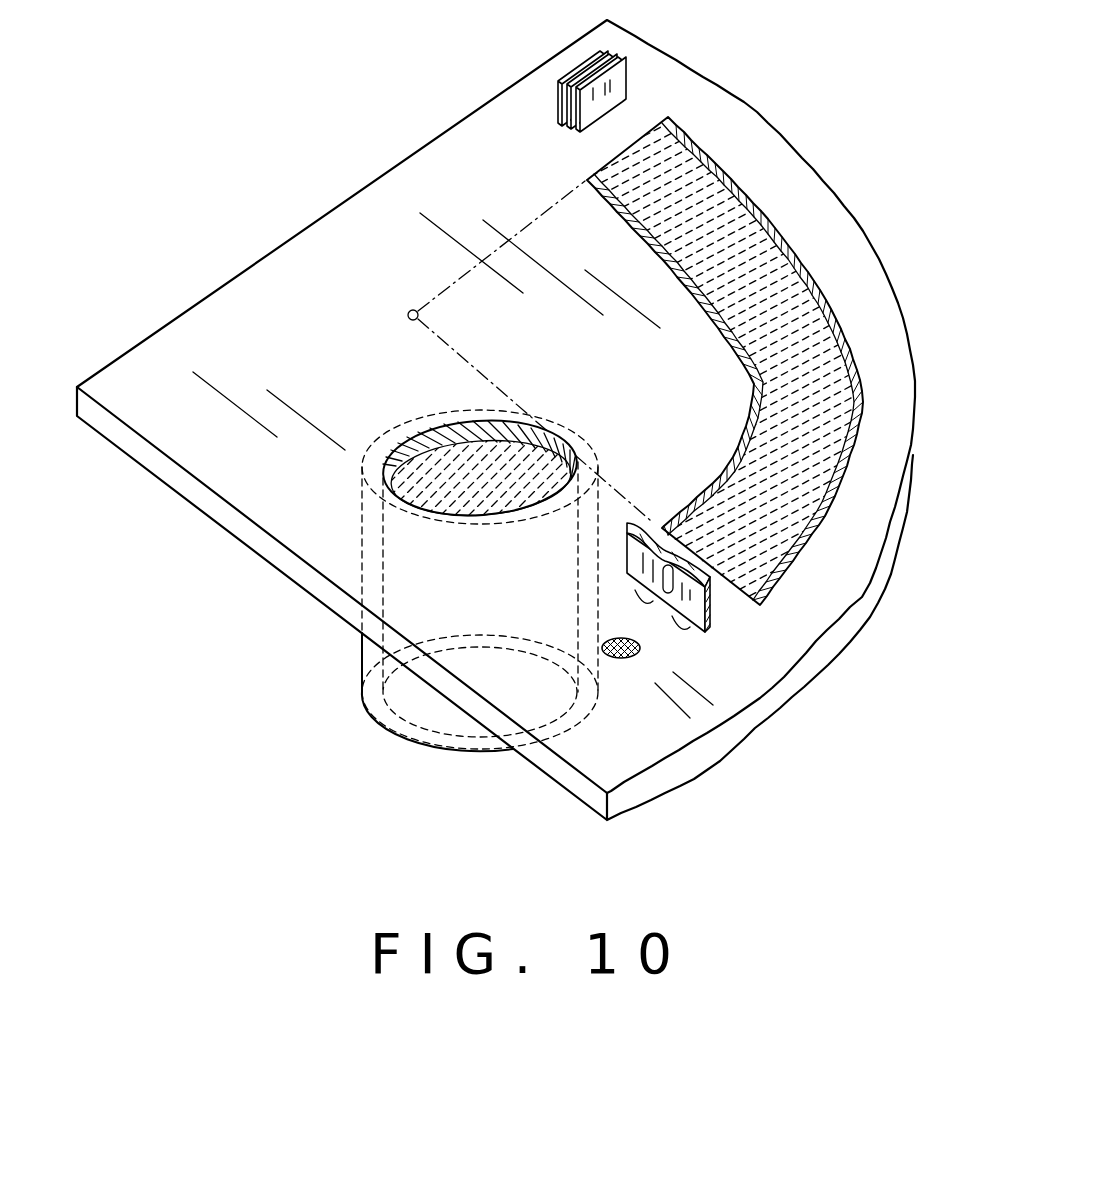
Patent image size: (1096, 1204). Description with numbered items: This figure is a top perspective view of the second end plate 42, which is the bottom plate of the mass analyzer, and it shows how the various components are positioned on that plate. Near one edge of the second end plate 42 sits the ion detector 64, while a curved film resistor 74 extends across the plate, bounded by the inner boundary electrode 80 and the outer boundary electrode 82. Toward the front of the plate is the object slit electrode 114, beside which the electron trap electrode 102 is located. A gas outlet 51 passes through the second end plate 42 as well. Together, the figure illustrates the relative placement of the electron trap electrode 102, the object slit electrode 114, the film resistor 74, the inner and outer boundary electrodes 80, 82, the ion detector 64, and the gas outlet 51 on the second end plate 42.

The second end plate 42 is at (765, 120).
The ion detector 64 is at (642, 58).
The film resistor 74 is at (780, 280).
The outer boundary electrode 82 is at (745, 187).
The inner boundary electrode 80 is at (693, 293).
The gas outlet 51 is at (450, 470).
The object slit electrode 114 is at (633, 527).
The electron trap electrode 102 is at (627, 658).